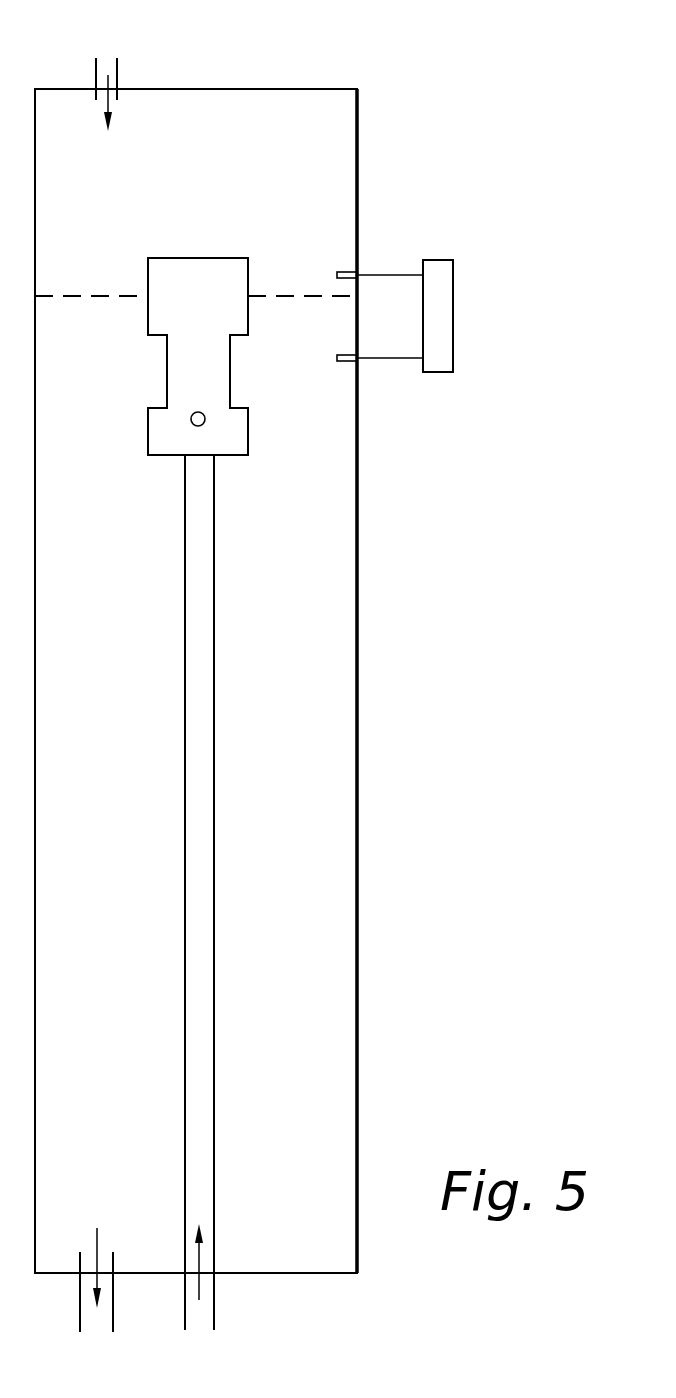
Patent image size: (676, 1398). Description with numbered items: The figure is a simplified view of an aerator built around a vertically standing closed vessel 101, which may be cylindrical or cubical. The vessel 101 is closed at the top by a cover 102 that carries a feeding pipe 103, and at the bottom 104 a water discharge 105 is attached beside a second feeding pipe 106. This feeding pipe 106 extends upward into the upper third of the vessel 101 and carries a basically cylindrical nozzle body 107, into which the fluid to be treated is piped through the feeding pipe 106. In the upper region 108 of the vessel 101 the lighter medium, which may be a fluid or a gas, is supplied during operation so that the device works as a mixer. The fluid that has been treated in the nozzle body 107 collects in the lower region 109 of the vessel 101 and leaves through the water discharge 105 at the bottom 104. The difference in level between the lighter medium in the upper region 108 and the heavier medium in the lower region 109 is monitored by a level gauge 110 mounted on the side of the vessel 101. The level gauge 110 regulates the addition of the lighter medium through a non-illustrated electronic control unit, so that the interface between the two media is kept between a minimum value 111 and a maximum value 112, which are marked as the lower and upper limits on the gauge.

The closed vessel 101 is at (357, 578).
The cover 102 is at (234, 88).
The feeding pipe 103 is at (107, 68).
The bottom 104 is at (270, 1276).
The water discharge 105 is at (93, 1322).
The feeding pipe 106 is at (198, 1320).
The nozzle body 107 is at (214, 378).
The upper region 108 is at (318, 155).
The lower region 109 is at (292, 957).
The level gauge 110 is at (437, 308).
The minimum value 111 is at (340, 358).
The maximum value 112 is at (342, 272).